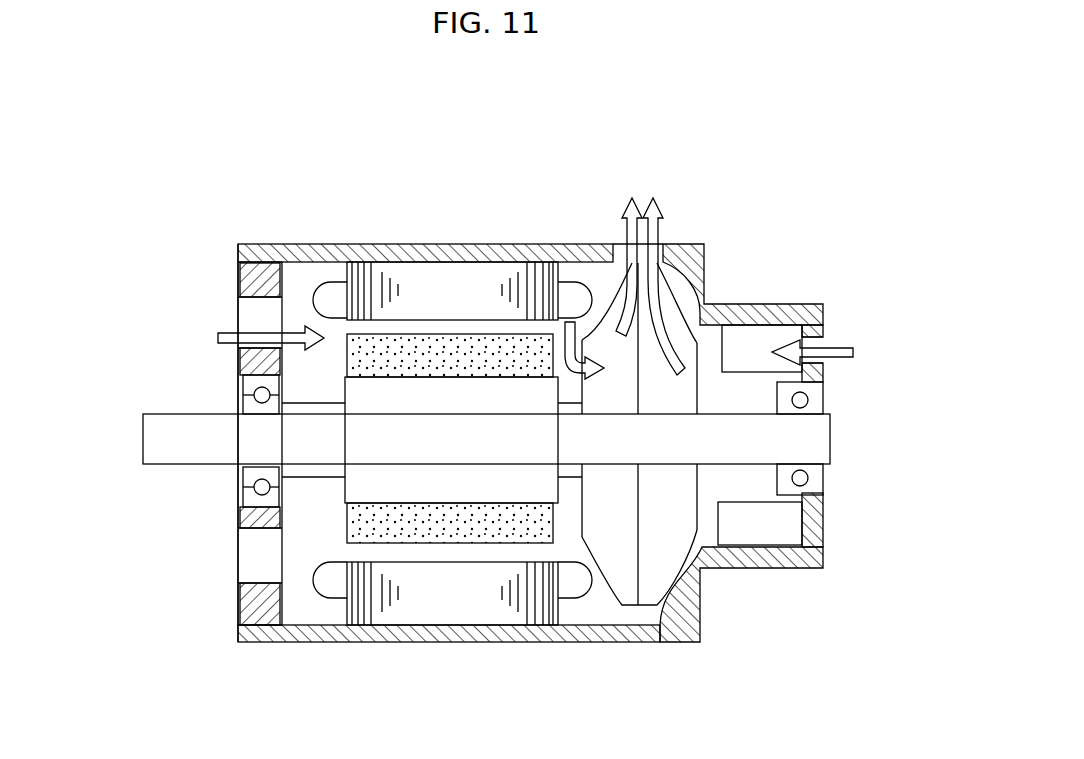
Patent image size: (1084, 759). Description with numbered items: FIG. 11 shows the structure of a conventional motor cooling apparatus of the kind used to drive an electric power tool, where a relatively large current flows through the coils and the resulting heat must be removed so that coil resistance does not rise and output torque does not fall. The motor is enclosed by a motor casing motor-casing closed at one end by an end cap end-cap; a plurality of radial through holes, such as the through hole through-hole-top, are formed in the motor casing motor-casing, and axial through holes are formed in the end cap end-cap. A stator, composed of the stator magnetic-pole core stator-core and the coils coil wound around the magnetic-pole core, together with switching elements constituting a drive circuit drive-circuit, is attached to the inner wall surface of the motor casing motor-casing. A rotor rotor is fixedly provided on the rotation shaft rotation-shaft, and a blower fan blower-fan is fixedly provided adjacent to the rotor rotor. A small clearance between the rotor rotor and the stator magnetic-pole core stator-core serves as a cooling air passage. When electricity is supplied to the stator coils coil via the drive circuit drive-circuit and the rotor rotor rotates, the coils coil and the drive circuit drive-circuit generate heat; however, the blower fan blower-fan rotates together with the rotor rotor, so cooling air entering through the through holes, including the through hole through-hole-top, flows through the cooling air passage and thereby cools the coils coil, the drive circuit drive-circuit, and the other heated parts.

The motor casing motor-casing is at (332, 245).
The end cap end-cap is at (239, 273).
The through hole through-hole-top is at (663, 227).
The stator magnetic-pole core stator-core is at (450, 283).
The element coil is at (567, 297).
The element rotor is at (477, 477).
The rotation shaft rotation-shaft is at (202, 452).
The blower fan blower-fan is at (622, 538).
The drive circuit drive-circuit is at (757, 528).